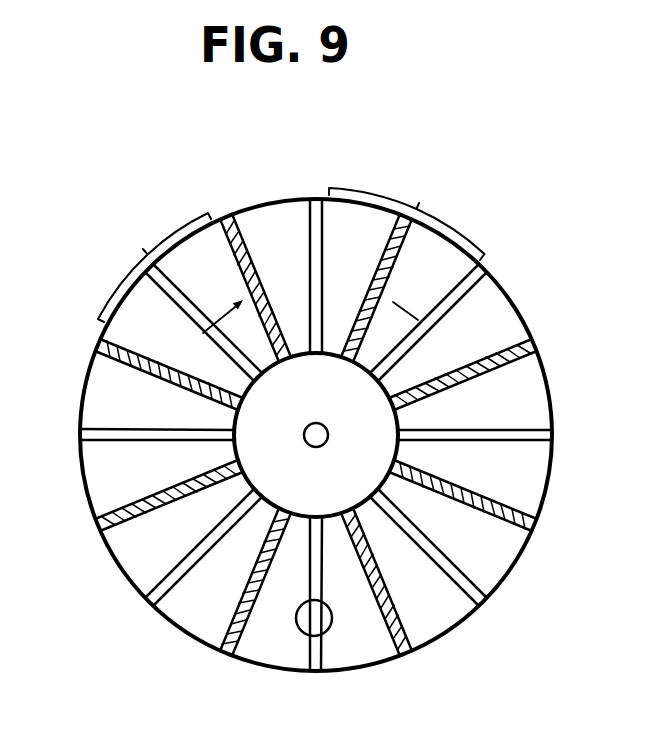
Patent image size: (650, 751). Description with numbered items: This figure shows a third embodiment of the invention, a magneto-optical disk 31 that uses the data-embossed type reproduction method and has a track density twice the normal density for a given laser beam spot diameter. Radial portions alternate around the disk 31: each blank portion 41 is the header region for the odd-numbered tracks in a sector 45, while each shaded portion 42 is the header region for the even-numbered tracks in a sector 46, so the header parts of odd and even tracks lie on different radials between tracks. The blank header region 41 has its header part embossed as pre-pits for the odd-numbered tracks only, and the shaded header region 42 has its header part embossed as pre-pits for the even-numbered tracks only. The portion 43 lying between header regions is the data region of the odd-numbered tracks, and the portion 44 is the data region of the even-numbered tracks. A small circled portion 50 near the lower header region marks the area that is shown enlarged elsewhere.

The magneto-optical disk 31 is at (493, 333).
The blank portion (header region for odd-numbered tracks) 41 is at (309, 216).
The shaded portion (header region for even-numbered tracks) 42 is at (247, 216).
The data region of the odd-numbered tracks 43 is at (407, 214).
The data region of the even-numbered tracks 44 is at (154, 267).
The sector (odd-numbered tracks) 45 is at (393, 302).
The sector (even-numbered tracks) 46 is at (203, 333).
The portion of the disk 50 is at (324, 632).